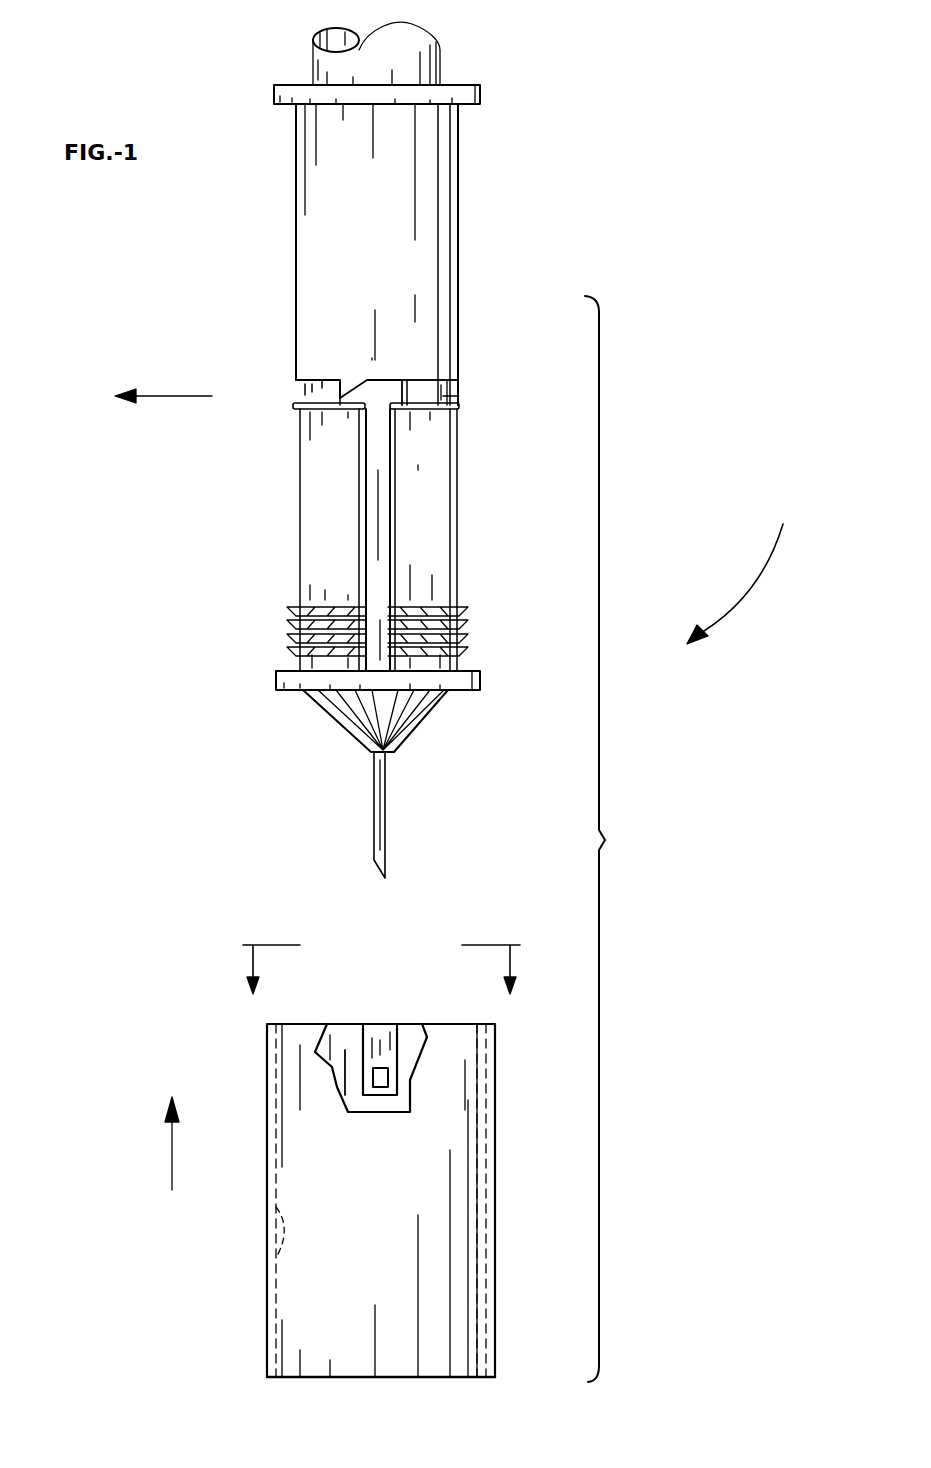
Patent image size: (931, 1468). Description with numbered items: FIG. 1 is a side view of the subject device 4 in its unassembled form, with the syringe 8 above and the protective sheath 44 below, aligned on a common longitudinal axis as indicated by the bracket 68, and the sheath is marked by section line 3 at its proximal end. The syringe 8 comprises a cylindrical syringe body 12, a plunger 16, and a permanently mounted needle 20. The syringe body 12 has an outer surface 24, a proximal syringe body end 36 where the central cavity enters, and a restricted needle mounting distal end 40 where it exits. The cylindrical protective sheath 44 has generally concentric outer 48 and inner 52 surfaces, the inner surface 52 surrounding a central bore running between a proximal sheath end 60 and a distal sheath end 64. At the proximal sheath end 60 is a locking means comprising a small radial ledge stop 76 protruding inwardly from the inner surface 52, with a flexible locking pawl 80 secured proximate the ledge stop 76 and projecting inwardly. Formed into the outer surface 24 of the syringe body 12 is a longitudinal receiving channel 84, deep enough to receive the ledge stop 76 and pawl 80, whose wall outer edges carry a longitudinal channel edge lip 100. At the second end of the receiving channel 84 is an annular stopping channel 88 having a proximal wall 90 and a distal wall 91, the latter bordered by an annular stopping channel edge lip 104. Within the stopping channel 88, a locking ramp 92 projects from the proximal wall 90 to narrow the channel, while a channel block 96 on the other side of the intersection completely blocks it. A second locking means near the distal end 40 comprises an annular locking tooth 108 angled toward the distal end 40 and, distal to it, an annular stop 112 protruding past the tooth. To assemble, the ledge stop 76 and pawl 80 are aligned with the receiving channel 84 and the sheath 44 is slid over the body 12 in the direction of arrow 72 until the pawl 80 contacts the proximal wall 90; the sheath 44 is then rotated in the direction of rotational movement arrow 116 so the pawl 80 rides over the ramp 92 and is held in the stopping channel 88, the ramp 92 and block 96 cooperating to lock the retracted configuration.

The section line 3- 3 is at (381, 984).
The subject device 4 is at (739, 572).
The syringe 8 is at (266, 282).
The syringe body 12 is at (384, 247).
The plunger 16 is at (408, 70).
The needle 20 is at (385, 840).
The outer surface 24 is at (459, 272).
The proximal syringe body end 36 is at (292, 83).
The distal end 40 is at (420, 731).
The protective sheath 44 is at (437, 1285).
The outer surface 48 is at (495, 1220).
The inner surface 52 is at (270, 1205).
The proximal sheath end 60 is at (312, 1024).
The distal sheath end 64 is at (360, 1378).
The bracket 68 is at (610, 839).
The arrow 72 is at (172, 1130).
The ledge stop 76 is at (397, 1087).
The flexible locking pawl 80 is at (379, 1087).
The longitudinal receiving channel 84 is at (371, 545).
The annular stopping channel 88 is at (310, 397).
The proximal wall 90 is at (447, 383).
The distal wall 91 is at (448, 397).
The locking ramp 92 is at (343, 380).
The channel block 96 is at (407, 383).
The longitudinal channel edge lip 100 is at (358, 493).
The annular stopping channel edge lip 104 is at (315, 405).
The locking tooth 108 is at (467, 607).
The annular stop 112 is at (481, 677).
The rotational movement arrow 116 is at (163, 387).